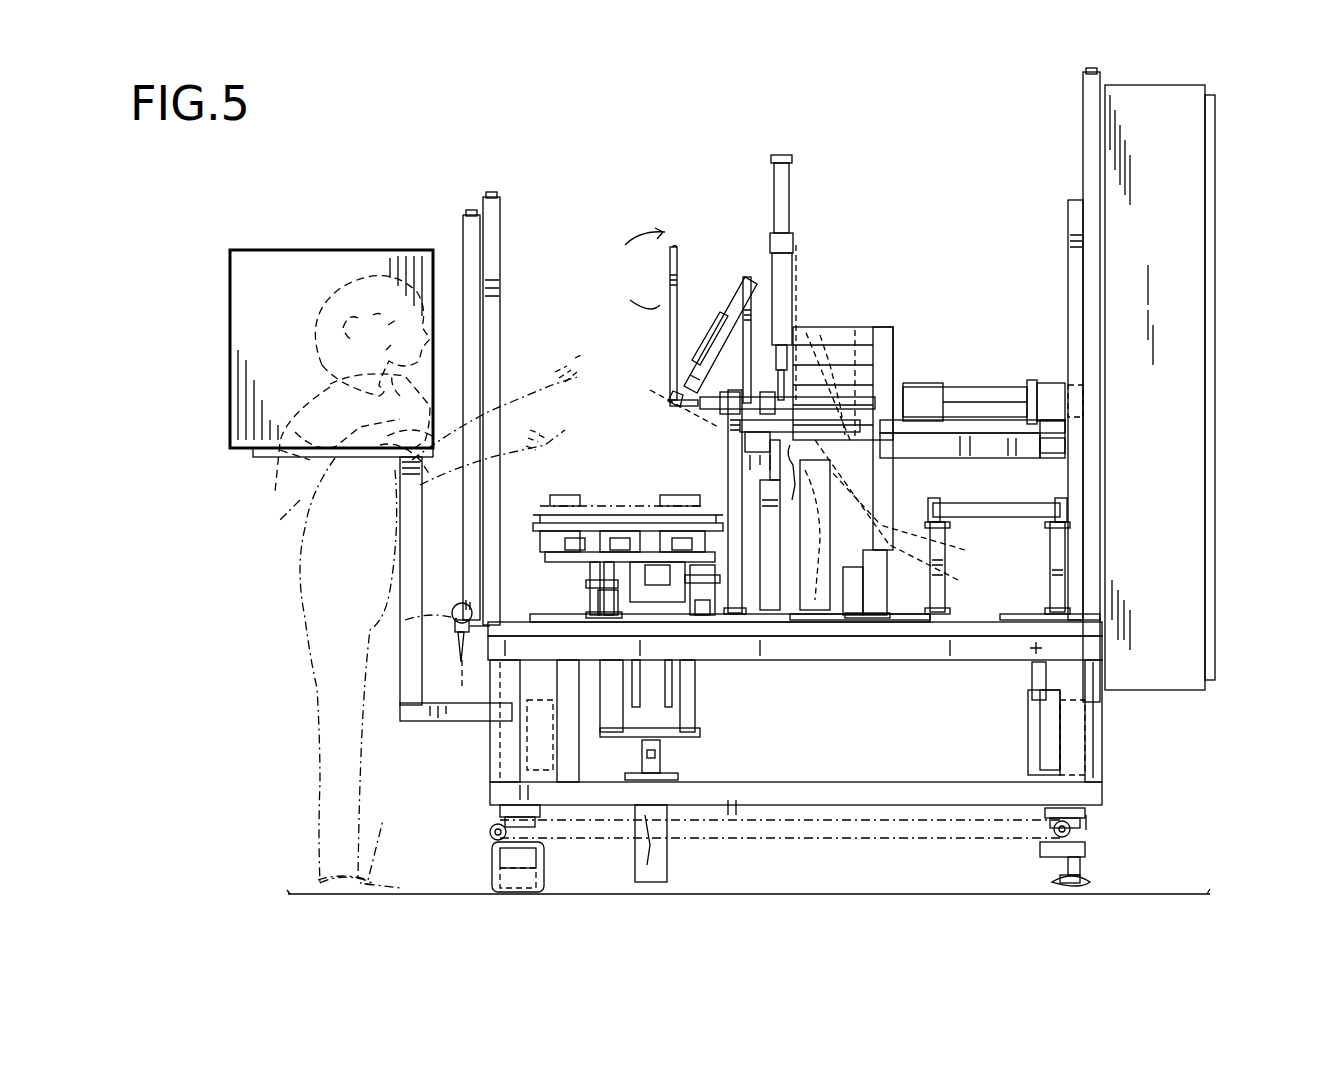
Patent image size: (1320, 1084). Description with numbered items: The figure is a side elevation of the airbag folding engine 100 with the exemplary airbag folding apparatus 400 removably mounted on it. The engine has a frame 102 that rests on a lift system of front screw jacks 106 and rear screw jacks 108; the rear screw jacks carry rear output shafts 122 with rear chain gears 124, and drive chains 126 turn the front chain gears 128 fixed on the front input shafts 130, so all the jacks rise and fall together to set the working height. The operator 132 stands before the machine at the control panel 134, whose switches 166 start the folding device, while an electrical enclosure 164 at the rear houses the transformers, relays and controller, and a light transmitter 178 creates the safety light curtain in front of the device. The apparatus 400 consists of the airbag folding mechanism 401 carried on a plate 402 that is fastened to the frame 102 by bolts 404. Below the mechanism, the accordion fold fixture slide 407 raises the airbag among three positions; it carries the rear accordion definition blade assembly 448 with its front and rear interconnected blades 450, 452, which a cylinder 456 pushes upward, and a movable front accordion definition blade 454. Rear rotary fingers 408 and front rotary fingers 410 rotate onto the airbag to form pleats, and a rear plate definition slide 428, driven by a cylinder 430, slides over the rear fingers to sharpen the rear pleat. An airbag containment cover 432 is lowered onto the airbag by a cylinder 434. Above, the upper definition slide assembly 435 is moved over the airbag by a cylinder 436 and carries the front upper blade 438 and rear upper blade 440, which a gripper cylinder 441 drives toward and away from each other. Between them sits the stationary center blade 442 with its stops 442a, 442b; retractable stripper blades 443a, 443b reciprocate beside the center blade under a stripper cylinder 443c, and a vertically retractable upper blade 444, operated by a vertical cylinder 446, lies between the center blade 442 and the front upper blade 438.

The airbag folding engine 100 is at (1178, 748).
The frame 102 is at (978, 662).
The front screw jacks 106 is at (495, 890).
The rear screw jacks 108 is at (1080, 890).
The rear output shafts 122 is at (1088, 822).
The rear chain gears 124 is at (1085, 832).
The drive chains 126 is at (828, 843).
The front chain gears 128 is at (502, 815).
The front input shafts 130 is at (490, 832).
The operator 132 is at (305, 520).
The control panel 134 is at (210, 312).
The electrical enclosure 164 is at (1195, 430).
The Opto-Touch switches 166 is at (465, 610).
The light transmitter 178 is at (463, 240).
The airbag folding apparatus 400 is at (962, 152).
The airbag folding mechanism 401 is at (890, 326).
The plate 402 is at (825, 615).
The bolts 404 is at (1062, 616).
The accordion fold fixture slide 407 is at (678, 752).
The rear rotary fingers 408 is at (653, 577).
The front rotary fingers 410 is at (538, 520).
The rear plate definition slide 428 is at (762, 535).
The cylinder 430 is at (1062, 525).
The airbag containment cover 432 is at (663, 310).
The cylinder 434 is at (715, 317).
The upper definition slide assembly 435 is at (948, 347).
The cylinder 436 is at (1005, 383).
The front upper blade 438 is at (740, 480).
The rear upper blade 440 is at (863, 455).
The gripper cylinder 441 is at (1065, 447).
The stationary center blade 442 is at (792, 490).
The stop 442a is at (745, 450).
The stop 442b is at (924, 515).
The retractable stripper blade 443a is at (661, 397).
The retractable stripper blade 443b is at (912, 515).
The stripper cylinder 443c is at (805, 345).
The vertically retractable upper blade 444 is at (800, 600).
The vertical cylinder 446 is at (800, 252).
The rear accordion definition blade assembly 448 is at (647, 520).
The front interconnected blade 450 is at (600, 588).
The rear interconnected blade 452 is at (720, 607).
The front accordion definition blade 454 is at (620, 580).
The cylinder 456 is at (668, 862).